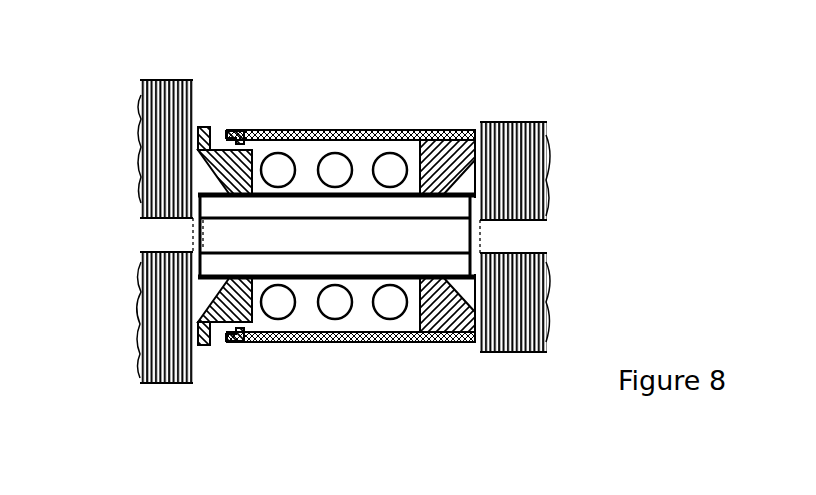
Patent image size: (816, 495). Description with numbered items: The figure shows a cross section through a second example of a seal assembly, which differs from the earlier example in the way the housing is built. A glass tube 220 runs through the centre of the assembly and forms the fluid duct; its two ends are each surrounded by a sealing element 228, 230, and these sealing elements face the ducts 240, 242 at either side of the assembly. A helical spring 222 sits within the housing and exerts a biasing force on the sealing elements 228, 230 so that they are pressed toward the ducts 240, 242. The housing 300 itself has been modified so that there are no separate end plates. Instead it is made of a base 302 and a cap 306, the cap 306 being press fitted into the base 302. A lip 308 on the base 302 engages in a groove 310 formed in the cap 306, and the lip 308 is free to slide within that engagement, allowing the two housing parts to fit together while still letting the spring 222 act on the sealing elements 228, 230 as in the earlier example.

The glass tube 220 is at (360, 248).
The helical spring 222 is at (340, 310).
The sealing element 228 is at (480, 280).
The sealing element 230 is at (200, 287).
The duct 240 is at (523, 330).
The duct 242 is at (137, 337).
The housing 300 is at (336, 112).
The base 302 is at (343, 341).
The cap 306 is at (230, 345).
The lip 308 is at (234, 133).
The groove 310 is at (219, 148).